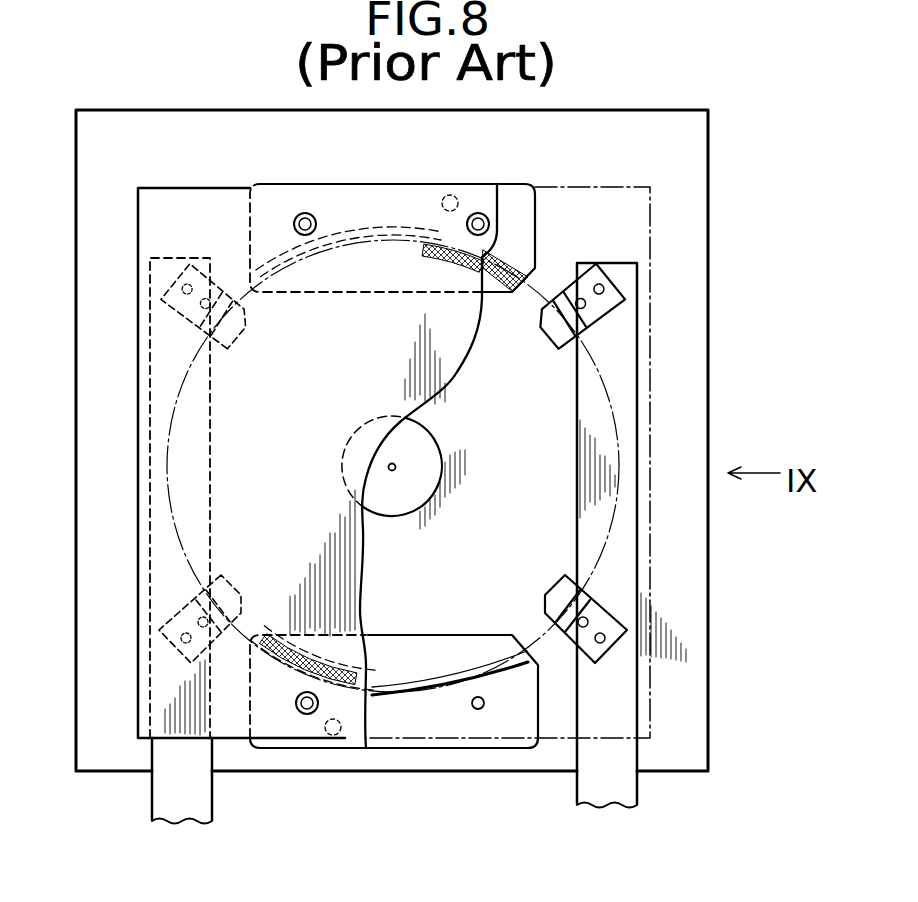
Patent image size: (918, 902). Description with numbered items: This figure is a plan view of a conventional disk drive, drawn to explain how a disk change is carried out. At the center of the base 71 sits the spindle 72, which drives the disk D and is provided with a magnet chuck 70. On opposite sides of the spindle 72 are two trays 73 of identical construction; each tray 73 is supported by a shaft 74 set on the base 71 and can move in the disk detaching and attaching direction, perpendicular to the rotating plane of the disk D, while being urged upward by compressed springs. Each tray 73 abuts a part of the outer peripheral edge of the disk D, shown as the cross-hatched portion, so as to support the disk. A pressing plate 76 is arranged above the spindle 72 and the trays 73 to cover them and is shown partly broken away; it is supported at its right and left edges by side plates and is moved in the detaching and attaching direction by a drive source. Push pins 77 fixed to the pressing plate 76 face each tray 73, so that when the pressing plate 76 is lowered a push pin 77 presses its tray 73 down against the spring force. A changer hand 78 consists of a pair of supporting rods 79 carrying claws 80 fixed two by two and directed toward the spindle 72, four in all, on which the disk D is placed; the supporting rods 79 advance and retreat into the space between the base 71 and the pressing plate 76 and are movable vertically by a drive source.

The magnet chuck 70 is at (405, 512).
The base 71 is at (708, 130).
The spindle 72 is at (398, 466).
The tray 73 is at (520, 200).
The shaft 74 is at (306, 212).
The pressing plate 76 is at (184, 200).
The push pin 77 is at (451, 194).
The changer hand 78 is at (653, 794).
The supporting rod 79 is at (197, 806).
The claw 80 is at (238, 346).
The disk D is at (620, 487).